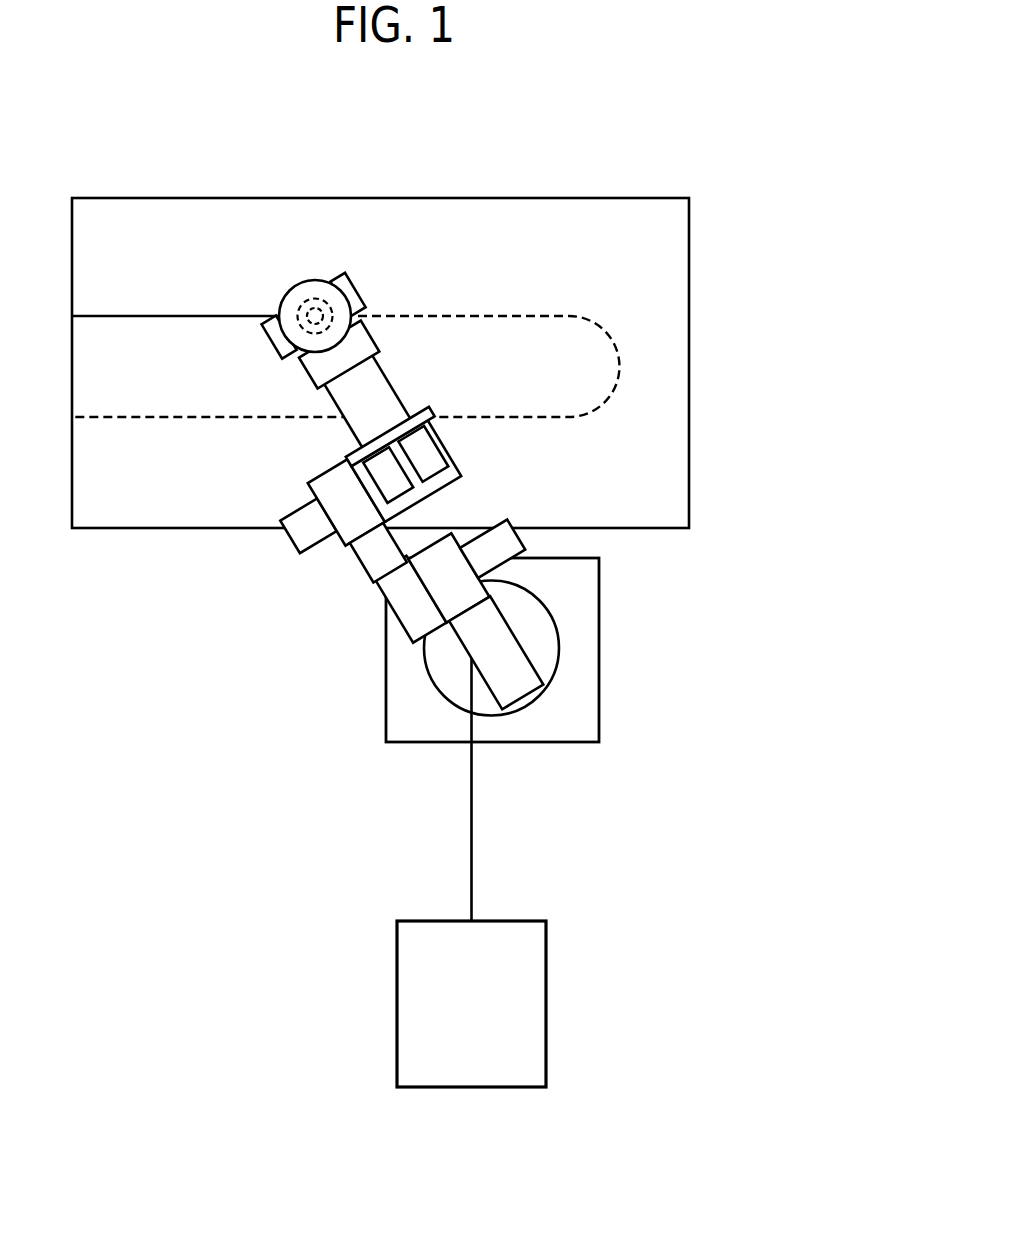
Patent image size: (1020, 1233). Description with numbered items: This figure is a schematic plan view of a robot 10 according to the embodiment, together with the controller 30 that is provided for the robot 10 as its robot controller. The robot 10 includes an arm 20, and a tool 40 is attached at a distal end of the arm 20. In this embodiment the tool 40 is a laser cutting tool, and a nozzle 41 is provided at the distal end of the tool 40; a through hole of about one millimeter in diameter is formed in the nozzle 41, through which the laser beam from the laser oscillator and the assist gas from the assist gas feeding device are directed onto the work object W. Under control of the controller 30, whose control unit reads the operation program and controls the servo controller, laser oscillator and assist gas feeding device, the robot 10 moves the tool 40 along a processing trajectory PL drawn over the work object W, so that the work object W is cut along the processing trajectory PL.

The robot 10 is at (352, 687).
The arm 20 is at (355, 557).
The controller 30 is at (547, 998).
The tool 40 is at (311, 298).
The nozzle 41 is at (300, 311).
The work object W is at (689, 367).
The processing trajectory PL is at (137, 315).